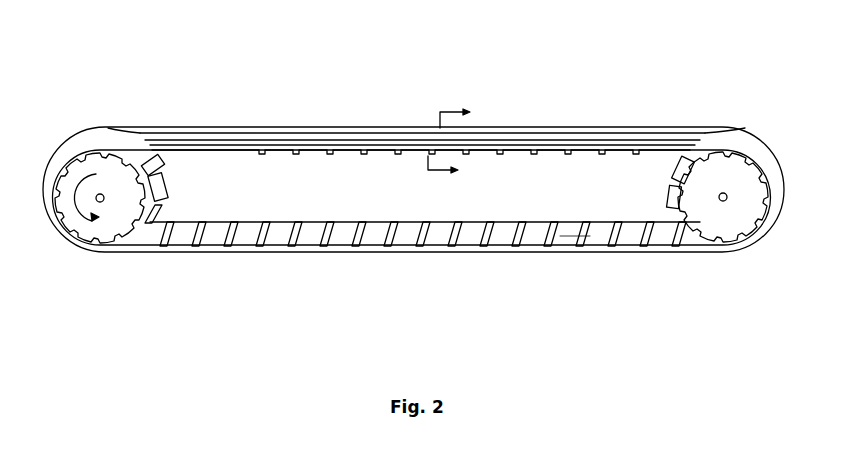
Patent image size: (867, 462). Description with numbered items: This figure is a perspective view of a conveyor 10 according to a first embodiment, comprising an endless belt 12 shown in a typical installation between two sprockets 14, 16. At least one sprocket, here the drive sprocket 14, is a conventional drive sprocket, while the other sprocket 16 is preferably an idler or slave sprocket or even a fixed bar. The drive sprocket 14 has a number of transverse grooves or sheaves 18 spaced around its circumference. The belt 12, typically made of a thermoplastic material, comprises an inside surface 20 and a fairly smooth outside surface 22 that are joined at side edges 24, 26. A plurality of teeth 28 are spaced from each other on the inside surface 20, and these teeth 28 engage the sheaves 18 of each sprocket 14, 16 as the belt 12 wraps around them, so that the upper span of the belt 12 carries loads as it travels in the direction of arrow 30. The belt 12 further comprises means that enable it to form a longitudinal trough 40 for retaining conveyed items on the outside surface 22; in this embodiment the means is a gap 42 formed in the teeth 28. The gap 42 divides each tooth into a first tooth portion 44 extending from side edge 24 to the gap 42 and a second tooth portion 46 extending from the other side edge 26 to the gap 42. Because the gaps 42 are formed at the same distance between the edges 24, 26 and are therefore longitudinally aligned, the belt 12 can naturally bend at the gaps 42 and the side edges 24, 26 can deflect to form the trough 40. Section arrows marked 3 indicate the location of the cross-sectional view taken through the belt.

The conveyor 10 is at (541, 50).
The endless belt 12 is at (255, 127).
The drive sprocket 14 is at (115, 221).
The idler sprocket 16 is at (735, 222).
The sheaves 18 is at (176, 200).
The inside surface 20 is at (560, 236).
The outside surface 22 is at (551, 132).
The side edge 24 is at (351, 128).
The side edge 26 is at (317, 153).
The teeth 28 is at (326, 252).
The arrow 30 is at (75, 207).
The longitudinal trough 40 is at (622, 135).
The gap 42 is at (393, 226).
The first tooth portion 44 is at (481, 221).
The second tooth portion 46 is at (468, 241).
The section line for FIG. 3 is at (451, 140).